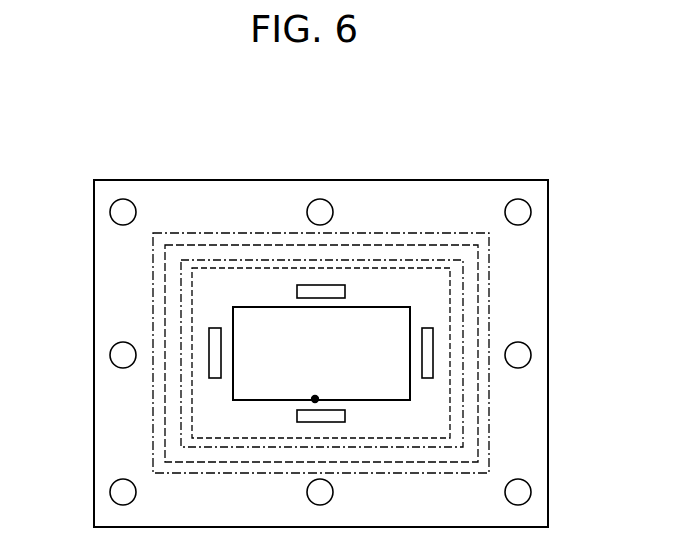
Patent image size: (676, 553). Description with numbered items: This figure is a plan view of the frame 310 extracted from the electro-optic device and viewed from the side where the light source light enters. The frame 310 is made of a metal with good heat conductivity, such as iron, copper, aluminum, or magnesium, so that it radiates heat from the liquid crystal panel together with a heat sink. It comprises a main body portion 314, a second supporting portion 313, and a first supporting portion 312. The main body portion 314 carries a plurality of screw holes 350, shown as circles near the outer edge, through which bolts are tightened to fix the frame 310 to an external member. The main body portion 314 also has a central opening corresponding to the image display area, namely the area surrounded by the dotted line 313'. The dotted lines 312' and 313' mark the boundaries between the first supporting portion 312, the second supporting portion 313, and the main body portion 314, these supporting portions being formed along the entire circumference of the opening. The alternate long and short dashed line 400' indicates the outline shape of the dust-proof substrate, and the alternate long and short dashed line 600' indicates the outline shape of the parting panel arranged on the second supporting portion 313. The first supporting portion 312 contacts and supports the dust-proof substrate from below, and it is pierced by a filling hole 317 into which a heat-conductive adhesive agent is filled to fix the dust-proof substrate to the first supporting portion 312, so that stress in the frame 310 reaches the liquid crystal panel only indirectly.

The frame 310 is at (298, 98).
The main body portion 314 is at (178, 232).
The second supporting portion 313 is at (321, 288).
The first supporting portion 312 is at (249, 275).
The alternate long and short dashed line 400' is at (321, 292).
The alternate long and short dashed line 600' is at (321, 298).
The dotted line 313' is at (249, 353).
The dotted line 312' is at (242, 353).
The filling hole 317 is at (316, 395).
The screw holes 350 is at (513, 348).